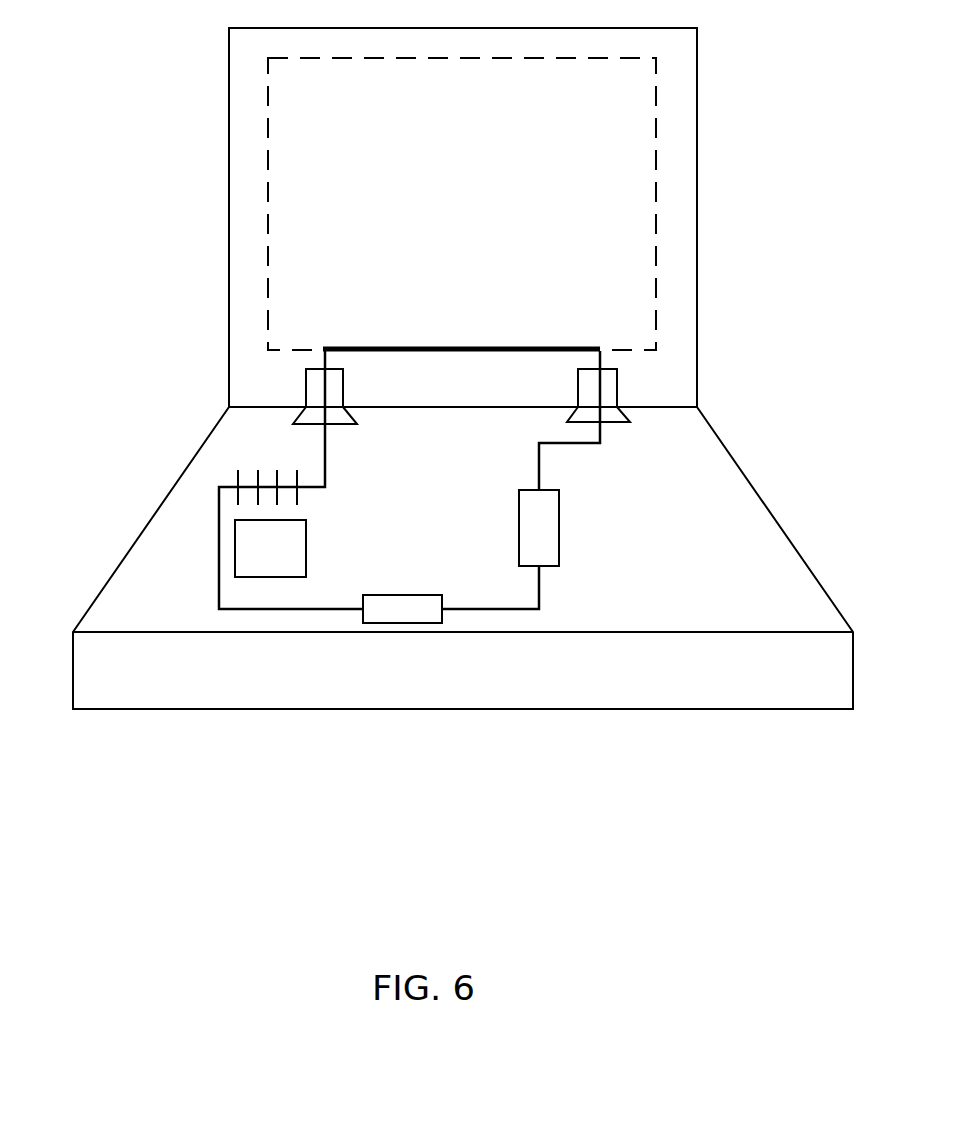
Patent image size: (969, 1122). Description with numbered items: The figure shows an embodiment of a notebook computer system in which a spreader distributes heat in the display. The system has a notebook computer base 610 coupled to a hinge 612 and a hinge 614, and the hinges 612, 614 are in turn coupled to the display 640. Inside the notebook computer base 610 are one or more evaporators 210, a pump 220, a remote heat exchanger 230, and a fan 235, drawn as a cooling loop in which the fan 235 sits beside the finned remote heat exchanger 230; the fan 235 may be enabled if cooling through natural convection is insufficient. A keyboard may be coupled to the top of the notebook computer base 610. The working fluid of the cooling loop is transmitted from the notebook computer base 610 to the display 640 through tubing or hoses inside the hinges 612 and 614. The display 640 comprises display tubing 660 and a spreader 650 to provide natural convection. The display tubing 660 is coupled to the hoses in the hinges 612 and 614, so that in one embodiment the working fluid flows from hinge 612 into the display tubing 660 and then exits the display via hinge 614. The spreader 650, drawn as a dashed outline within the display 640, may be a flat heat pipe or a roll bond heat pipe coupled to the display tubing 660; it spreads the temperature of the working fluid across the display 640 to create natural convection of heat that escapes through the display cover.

The display 640 is at (248, 50).
The spreader 650 is at (656, 131).
The display tubing 660 is at (439, 340).
The hinge 612 is at (316, 383).
The hinge 614 is at (607, 390).
The notebook computer base 610 is at (463, 558).
The remote heat exchanger 230 is at (223, 468).
The fan 235 is at (270, 548).
The pump 220 is at (372, 605).
The evaporator 210 is at (543, 515).